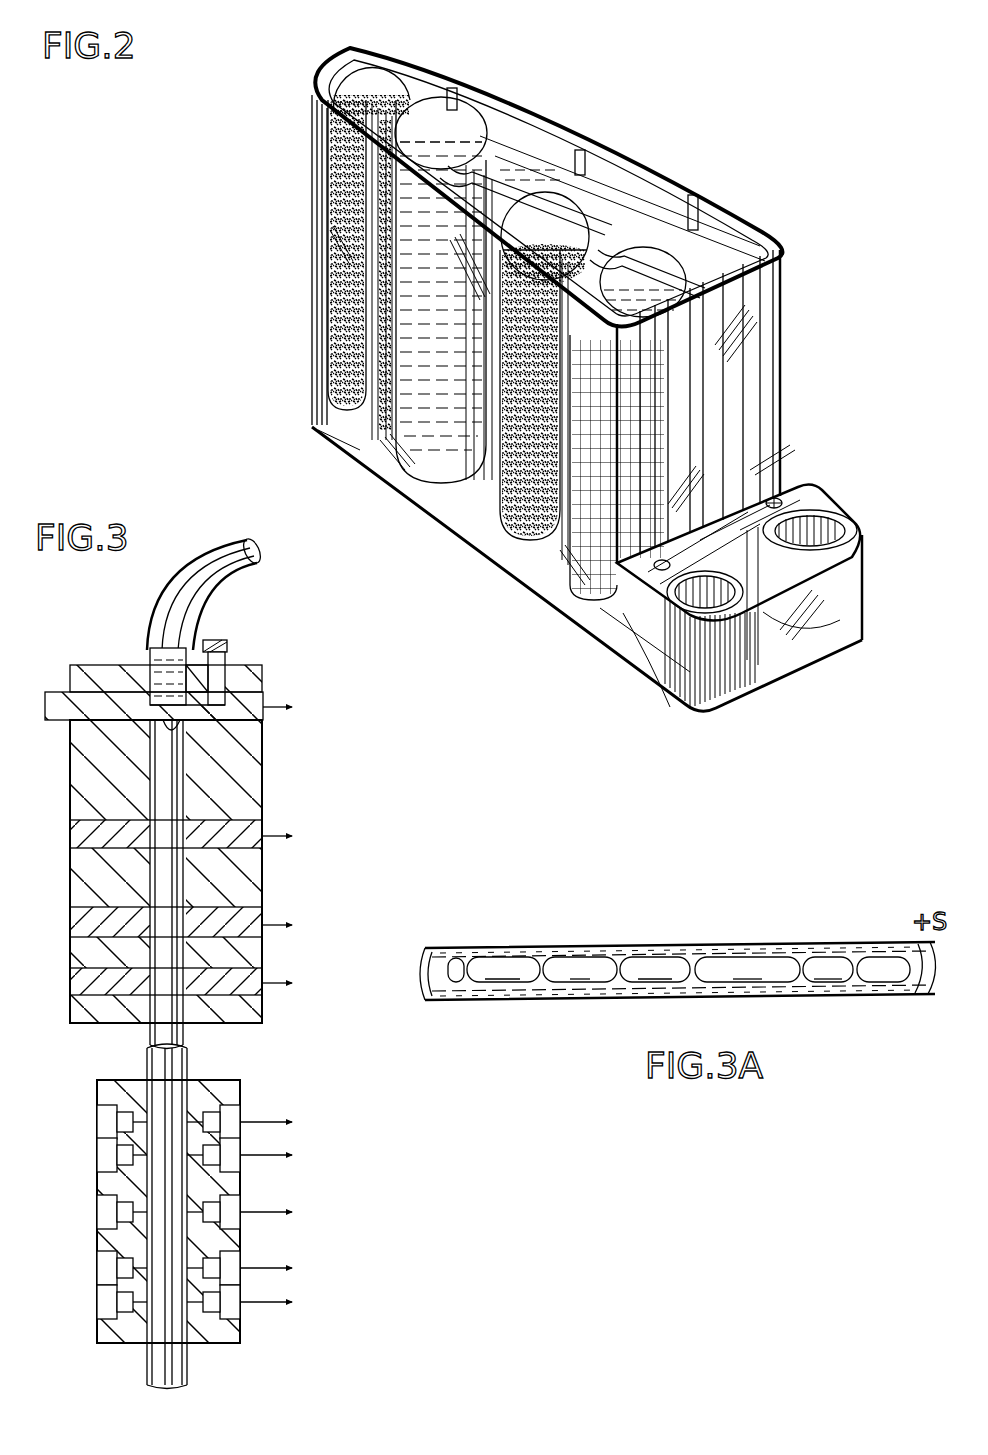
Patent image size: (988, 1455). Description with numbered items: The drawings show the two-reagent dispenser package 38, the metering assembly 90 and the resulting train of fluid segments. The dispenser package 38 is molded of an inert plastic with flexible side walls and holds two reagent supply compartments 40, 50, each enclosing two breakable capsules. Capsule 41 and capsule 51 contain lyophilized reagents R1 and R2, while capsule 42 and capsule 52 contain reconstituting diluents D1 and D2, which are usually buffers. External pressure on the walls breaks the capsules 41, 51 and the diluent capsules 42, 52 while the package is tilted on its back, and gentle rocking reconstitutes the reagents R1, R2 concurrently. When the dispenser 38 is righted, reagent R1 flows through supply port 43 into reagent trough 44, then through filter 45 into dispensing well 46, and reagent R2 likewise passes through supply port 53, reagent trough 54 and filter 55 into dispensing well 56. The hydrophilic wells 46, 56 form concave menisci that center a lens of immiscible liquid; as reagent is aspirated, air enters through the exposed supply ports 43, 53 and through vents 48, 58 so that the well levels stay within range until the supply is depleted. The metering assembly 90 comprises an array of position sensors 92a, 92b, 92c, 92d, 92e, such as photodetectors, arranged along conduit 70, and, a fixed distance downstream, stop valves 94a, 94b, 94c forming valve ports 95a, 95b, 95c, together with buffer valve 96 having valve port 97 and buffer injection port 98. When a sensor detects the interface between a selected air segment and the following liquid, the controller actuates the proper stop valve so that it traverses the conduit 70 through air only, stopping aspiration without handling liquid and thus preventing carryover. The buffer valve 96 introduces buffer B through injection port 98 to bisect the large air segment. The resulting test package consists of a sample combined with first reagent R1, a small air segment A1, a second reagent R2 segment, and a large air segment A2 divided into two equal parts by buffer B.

In FIG. 2, the two-reagent dispenser package 38 is at (660, 104).
In FIG. 2, the reagent supply compartment 40 is at (428, 82).
In FIG. 2, the capsule 41 is at (338, 313).
In FIG. 2, the capsule 42 is at (410, 437).
In FIG. 2, the supply port 43 is at (730, 513).
In FIG. 2, the reagent trough 44 is at (780, 500).
In FIG. 2, the filter 45 is at (838, 618).
In FIG. 2, the dispensing well 46 is at (830, 520).
In FIG. 2, the vent 48 is at (788, 490).
In FIG. 2, the reagent supply compartment 50 is at (605, 212).
In FIG. 2, the capsule 51 is at (507, 512).
In FIG. 2, the capsule 52 is at (587, 570).
In FIG. 2, the supply port 53 is at (632, 632).
In FIG. 2, the reagent trough 54 is at (677, 570).
In FIG. 2, the filter 55 is at (668, 668).
In FIG. 2, the dispensing well 56 is at (770, 583).
In FIG. 2, the vent 58 is at (672, 527).
In FIG. 2, the first reagent R1 is at (380, 100).
In FIG. 3A, the first reagent R1 is at (875, 968).
In FIG. 2, the second reagent R2 is at (540, 232).
In FIG. 3A, the second reagent R2 is at (747, 969).
In FIG. 2, the reconstituting diluent D1 is at (462, 168).
In FIG. 2, the reconstituting diluent D2 is at (630, 280).
In FIG. 3, the conduit 70 is at (158, 610).
In FIG. 3A, the conduit 70 is at (642, 946).
In FIG. 3, the metering assembly 90 is at (162, 557).
In FIG. 3, the buffer B is at (150, 663).
In FIG. 3A, the buffer B is at (580, 969).
In FIG. 3, the buffer valve 96 is at (57, 710).
In FIG. 3, the valve port 97 is at (125, 700).
In FIG. 3, the buffer injection port 98 is at (215, 642).
In FIG. 3, the stop valve 94a is at (77, 983).
In FIG. 3, the stop valve 94b is at (75, 922).
In FIG. 3, the stop valve 94c is at (75, 833).
In FIG. 3, the valve port 95a is at (170, 982).
In FIG. 3, the valve port 95b is at (170, 925).
In FIG. 3, the valve port 95c is at (170, 833).
In FIG. 3, the position sensor 92a is at (102, 1309).
In FIG. 3, the position sensor 92b is at (102, 1276).
In FIG. 3, the position sensor 92c is at (102, 1219).
In FIG. 3, the position sensor 92d is at (102, 1161).
In FIG. 3, the position sensor 92e is at (102, 1128).
In FIG. 3A, the small air segment A1 is at (660, 969).
In FIG. 3A, the large air segment A2 is at (655, 969).